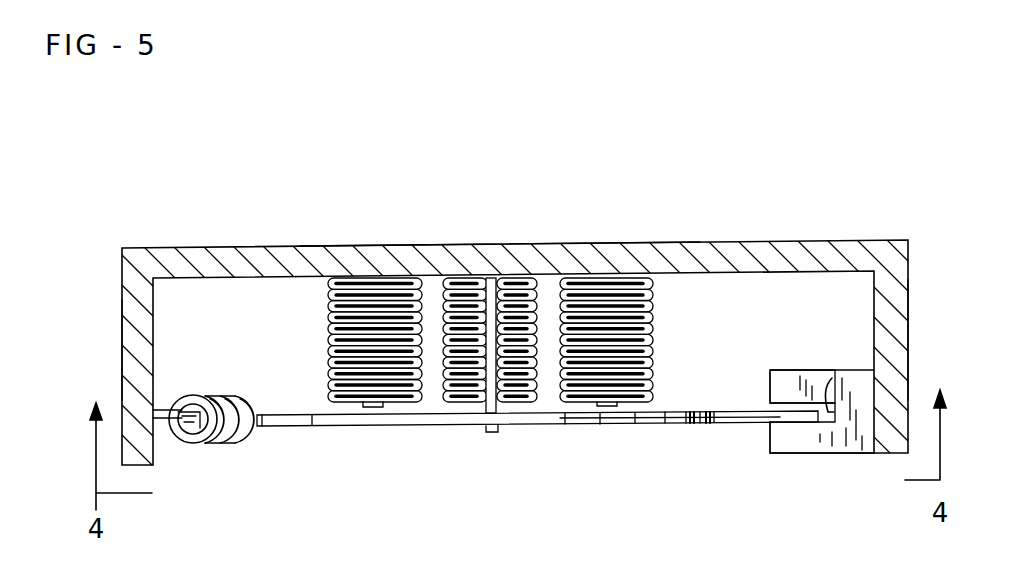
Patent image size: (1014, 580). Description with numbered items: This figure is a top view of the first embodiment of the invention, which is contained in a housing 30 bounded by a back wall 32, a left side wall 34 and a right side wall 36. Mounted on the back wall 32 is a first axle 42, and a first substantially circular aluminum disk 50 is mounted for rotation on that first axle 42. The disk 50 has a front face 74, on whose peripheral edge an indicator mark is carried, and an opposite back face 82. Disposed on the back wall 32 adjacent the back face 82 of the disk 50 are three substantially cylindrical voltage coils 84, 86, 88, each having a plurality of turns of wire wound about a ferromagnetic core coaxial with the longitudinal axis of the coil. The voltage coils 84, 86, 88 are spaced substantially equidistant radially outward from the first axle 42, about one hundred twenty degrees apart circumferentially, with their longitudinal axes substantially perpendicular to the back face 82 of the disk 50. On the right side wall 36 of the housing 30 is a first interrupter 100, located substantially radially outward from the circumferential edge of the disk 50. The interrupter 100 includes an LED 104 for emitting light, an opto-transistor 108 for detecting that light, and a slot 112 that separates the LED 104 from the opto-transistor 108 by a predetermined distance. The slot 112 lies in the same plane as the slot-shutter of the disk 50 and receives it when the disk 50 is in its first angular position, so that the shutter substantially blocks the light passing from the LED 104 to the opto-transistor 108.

The housing 30 is at (683, 241).
The back wall 32 is at (758, 240).
The left side wall 34 is at (124, 338).
The right side wall 36 is at (912, 313).
The first axle 42 is at (490, 433).
The first substantially circular aluminum disk 50 is at (650, 424).
The front face 74 is at (333, 428).
The back face 82 is at (299, 413).
The voltage coil 84 is at (328, 305).
The voltage coil 86 is at (656, 338).
The voltage coil 88 is at (512, 278).
The first interrupter 100 is at (832, 454).
The LED 104 is at (782, 438).
The opto-transistor 108 is at (797, 390).
The slot 112 is at (835, 380).